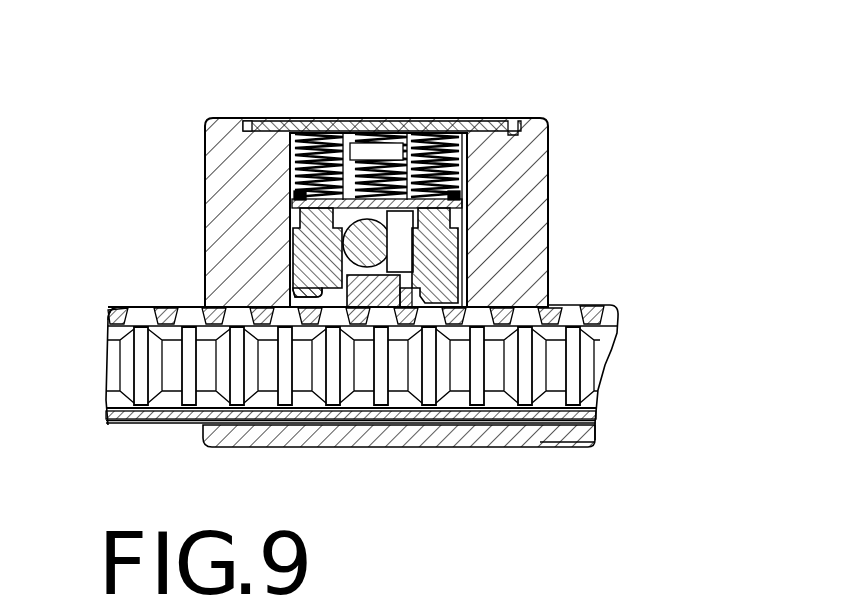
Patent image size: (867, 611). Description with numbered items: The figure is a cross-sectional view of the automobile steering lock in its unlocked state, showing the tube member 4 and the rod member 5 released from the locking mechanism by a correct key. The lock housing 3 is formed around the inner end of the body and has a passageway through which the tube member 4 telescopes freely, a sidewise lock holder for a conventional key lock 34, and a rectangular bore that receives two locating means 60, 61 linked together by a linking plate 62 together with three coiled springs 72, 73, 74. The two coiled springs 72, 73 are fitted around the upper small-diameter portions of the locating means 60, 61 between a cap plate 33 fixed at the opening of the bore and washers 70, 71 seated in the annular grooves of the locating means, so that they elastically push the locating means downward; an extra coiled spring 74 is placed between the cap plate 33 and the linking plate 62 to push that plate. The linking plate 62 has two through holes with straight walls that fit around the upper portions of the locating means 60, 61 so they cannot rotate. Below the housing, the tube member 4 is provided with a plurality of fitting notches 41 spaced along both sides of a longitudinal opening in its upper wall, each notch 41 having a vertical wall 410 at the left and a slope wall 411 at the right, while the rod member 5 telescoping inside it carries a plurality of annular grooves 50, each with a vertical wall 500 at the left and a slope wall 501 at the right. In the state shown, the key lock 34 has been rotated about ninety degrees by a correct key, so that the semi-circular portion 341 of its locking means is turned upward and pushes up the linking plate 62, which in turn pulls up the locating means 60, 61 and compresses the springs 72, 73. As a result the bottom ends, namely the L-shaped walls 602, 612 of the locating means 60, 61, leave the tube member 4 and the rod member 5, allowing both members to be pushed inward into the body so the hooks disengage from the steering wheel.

The lock housing 3 is at (540, 175).
The cap plate 33 is at (497, 120).
The key lock 34 is at (368, 120).
The semi-circular portion 341 is at (347, 118).
The linking plate 62 is at (396, 120).
The coiled spring 72 is at (300, 120).
The coiled spring 73 is at (436, 120).
The extra coiled spring 74 is at (378, 120).
The washer 70 is at (290, 195).
The washer 71 is at (460, 200).
The locating means 60 is at (297, 257).
The L-shaped wall 602 is at (202, 280).
The locating means 61 is at (443, 257).
The L-shaped wall 612 is at (412, 290).
The tube member 4 is at (108, 422).
The fitting notches 41 is at (128, 316).
The slope wall 411 is at (143, 316).
The vertical wall 410 is at (124, 309).
The rod member 5 is at (120, 362).
The annular grooves 50 is at (158, 408).
The vertical wall 500 is at (150, 418).
The slope wall 501 is at (178, 410).